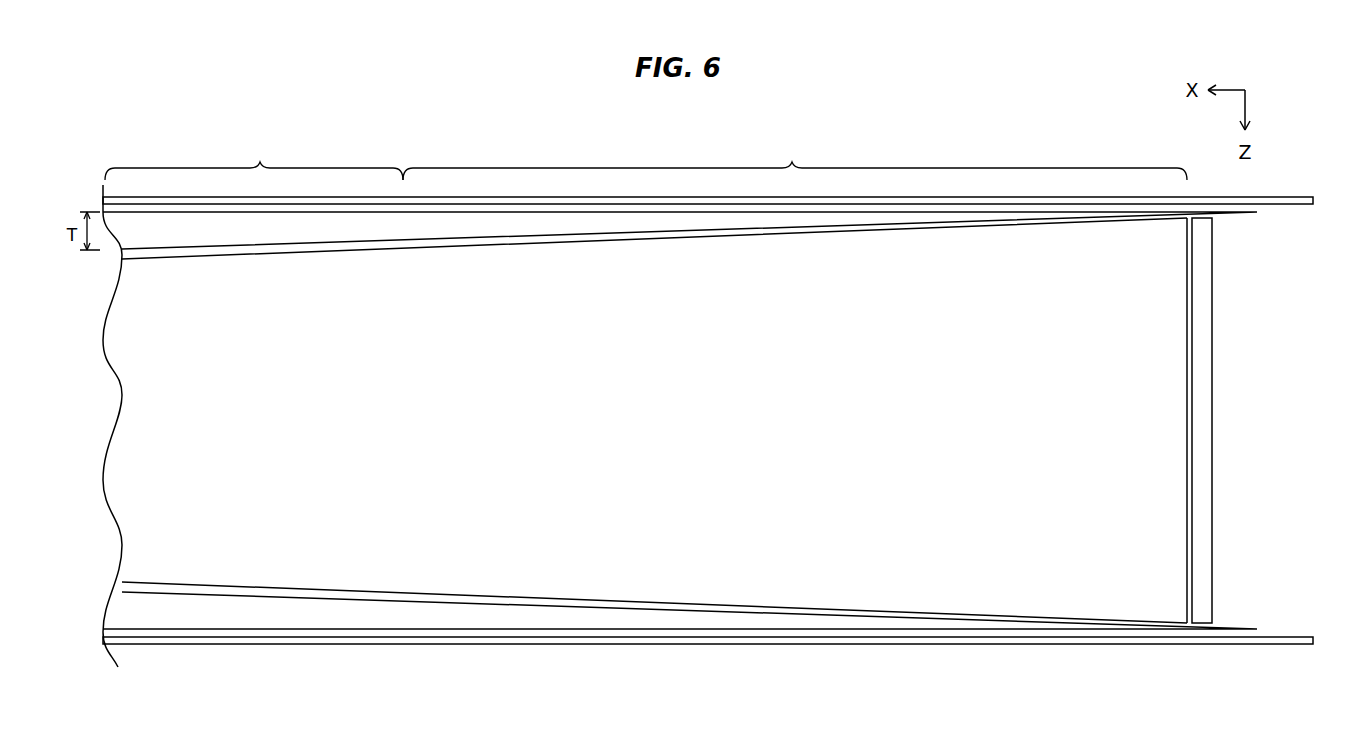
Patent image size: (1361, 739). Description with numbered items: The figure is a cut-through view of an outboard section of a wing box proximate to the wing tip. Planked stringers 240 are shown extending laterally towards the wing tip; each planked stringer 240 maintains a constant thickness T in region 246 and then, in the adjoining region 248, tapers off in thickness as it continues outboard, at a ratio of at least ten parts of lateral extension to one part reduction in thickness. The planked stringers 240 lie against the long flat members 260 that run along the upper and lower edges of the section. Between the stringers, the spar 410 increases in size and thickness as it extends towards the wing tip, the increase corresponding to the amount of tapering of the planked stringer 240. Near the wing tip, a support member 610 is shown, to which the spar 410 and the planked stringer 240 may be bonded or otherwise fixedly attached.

The planked stringer 240 is at (333, 233).
The region 246 is at (254, 160).
The tapered region 248 is at (795, 160).
The plate 260 is at (1287, 197).
The spar 410 is at (147, 397).
The support member 610 is at (1207, 427).